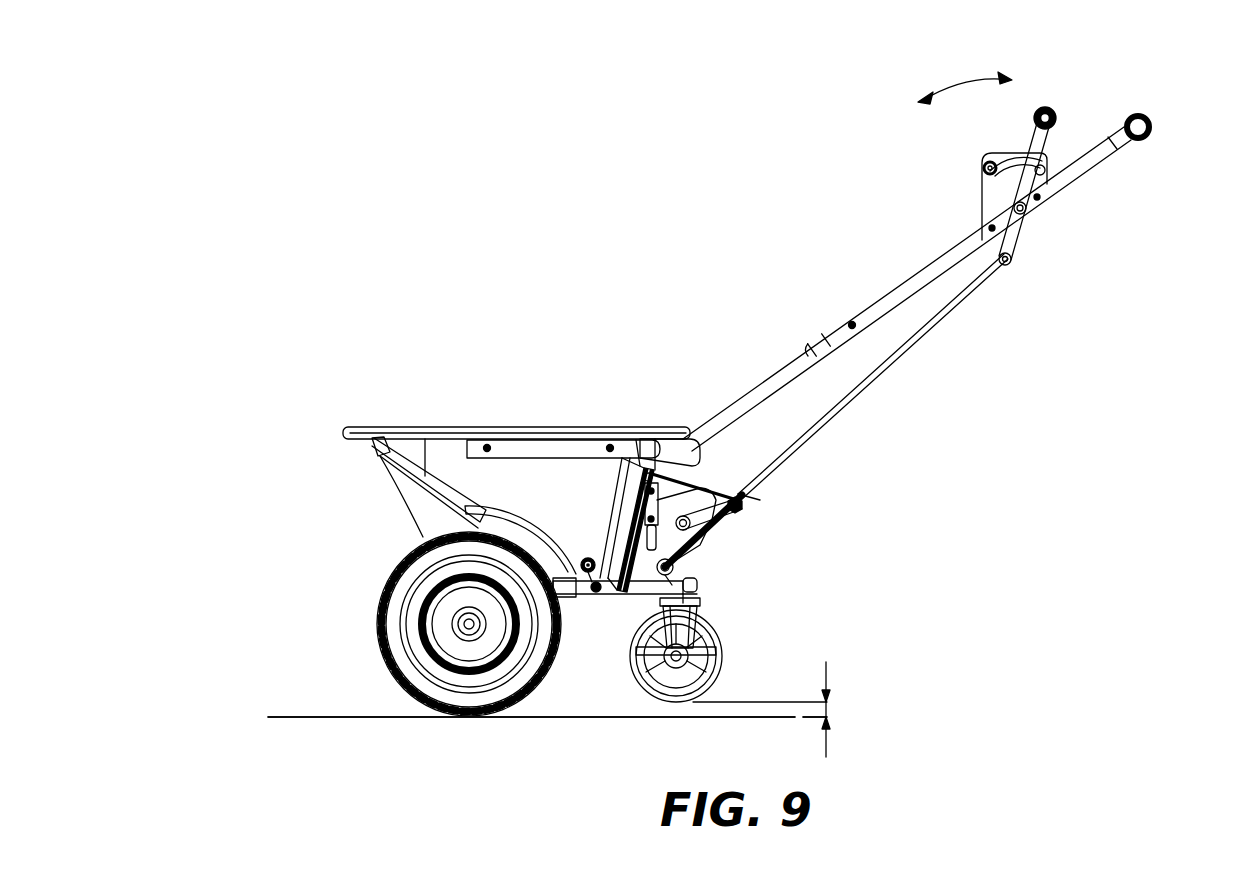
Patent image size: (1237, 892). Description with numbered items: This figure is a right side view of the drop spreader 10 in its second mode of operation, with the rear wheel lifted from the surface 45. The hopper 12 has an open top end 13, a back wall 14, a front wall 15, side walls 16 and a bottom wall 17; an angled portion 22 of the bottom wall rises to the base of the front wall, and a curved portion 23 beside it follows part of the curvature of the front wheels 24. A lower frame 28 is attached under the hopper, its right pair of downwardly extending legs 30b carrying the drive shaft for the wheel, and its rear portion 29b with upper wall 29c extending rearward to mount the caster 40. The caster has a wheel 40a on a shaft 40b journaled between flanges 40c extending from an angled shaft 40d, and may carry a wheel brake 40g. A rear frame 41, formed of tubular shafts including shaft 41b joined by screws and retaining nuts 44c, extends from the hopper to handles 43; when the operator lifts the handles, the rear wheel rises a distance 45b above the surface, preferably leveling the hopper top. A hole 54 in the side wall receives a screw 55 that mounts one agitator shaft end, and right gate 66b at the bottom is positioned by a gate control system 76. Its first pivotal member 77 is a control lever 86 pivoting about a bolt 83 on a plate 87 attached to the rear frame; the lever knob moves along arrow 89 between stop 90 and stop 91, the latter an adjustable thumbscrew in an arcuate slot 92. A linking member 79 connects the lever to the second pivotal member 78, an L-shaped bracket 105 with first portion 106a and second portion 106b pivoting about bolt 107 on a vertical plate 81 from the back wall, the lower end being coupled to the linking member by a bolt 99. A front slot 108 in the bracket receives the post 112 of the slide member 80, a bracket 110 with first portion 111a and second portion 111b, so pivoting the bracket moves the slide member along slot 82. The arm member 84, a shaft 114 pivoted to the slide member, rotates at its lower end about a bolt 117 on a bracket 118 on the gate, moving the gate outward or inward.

The drop spreader 10 is at (246, 118).
The hopper 12 is at (378, 426).
The open top end 13 is at (545, 440).
The back wall 14 is at (666, 440).
The front wall 15 is at (368, 442).
The side walls 16 is at (444, 440).
The bottom wall 17 is at (572, 598).
The angled portion 22 is at (440, 485).
The curved portions 23 is at (488, 510).
The wheels 24 is at (378, 636).
The lower frame 28 is at (378, 457).
The rear portion 29b is at (590, 596).
The upper wall 29c is at (692, 598).
The right pair of downwardly extending legs 30b is at (405, 515).
The caster 40 is at (640, 690).
The wheel 40a is at (716, 675).
The shaft 40b is at (688, 682).
The flanges 40c is at (698, 615).
The angled shaft 40d is at (700, 648).
The wheel brake 40g is at (712, 654).
The rear frame 41 is at (920, 270).
The tubular shaft 41b is at (868, 307).
The handles 43 is at (1153, 128).
The retaining nuts 44c is at (490, 444).
The surface 45 is at (290, 716).
The distance 45b is at (828, 708).
The hole 54 is at (586, 560).
The screw 55 is at (594, 580).
The right gate 66b is at (582, 596).
The gate control system 76 is at (1056, 113).
The first pivotal member 77 is at (1012, 262).
The second pivotal member 78 is at (715, 520).
The linking member 79 is at (745, 500).
The slide member 80 is at (644, 487).
The vertical plate 81 is at (654, 476).
The slot 82 is at (698, 585).
The bolt 83 is at (1027, 212).
The arm member 84 is at (700, 605).
The control lever 86 is at (1000, 190).
The plate 87 is at (982, 207).
The arrow 89 is at (965, 86).
The stop 90 is at (1045, 168).
The stop 91 is at (984, 165).
The arcuate slot 92 is at (1008, 156).
The bolt 99 is at (700, 590).
The bracket 105 is at (742, 520).
The first portion 106a is at (750, 510).
The second portion 106b is at (695, 560).
The bolt 107 is at (675, 565).
The front slot 108 is at (690, 518).
The bracket 110 is at (708, 490).
The first portion 111a is at (640, 470).
The second portion 111b is at (627, 462).
The post 112 is at (703, 486).
The shaft 114 is at (622, 520).
The bolt 117 is at (623, 594).
The bracket 118 is at (628, 527).